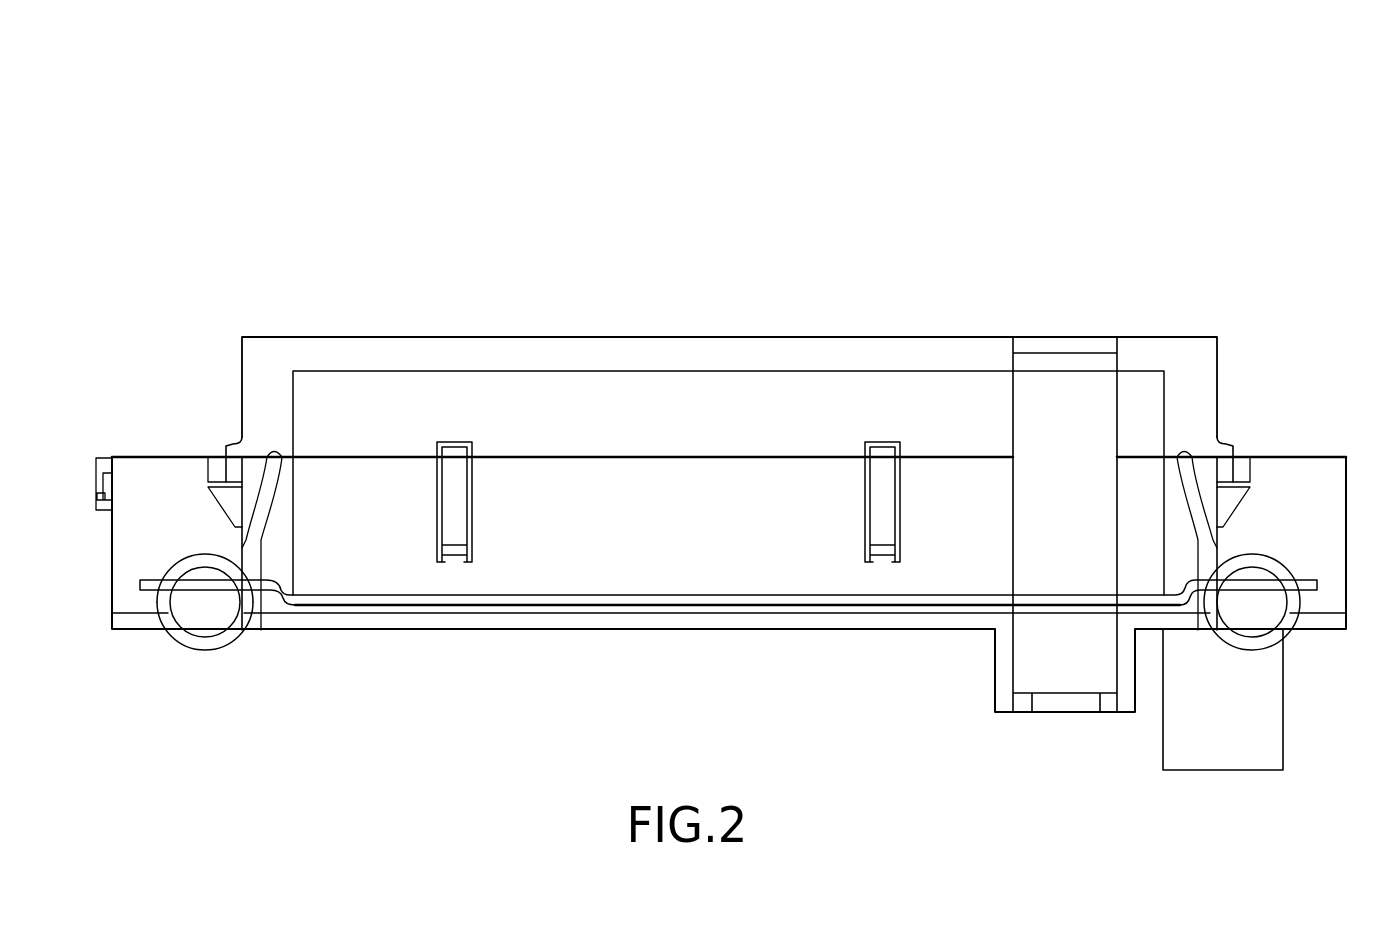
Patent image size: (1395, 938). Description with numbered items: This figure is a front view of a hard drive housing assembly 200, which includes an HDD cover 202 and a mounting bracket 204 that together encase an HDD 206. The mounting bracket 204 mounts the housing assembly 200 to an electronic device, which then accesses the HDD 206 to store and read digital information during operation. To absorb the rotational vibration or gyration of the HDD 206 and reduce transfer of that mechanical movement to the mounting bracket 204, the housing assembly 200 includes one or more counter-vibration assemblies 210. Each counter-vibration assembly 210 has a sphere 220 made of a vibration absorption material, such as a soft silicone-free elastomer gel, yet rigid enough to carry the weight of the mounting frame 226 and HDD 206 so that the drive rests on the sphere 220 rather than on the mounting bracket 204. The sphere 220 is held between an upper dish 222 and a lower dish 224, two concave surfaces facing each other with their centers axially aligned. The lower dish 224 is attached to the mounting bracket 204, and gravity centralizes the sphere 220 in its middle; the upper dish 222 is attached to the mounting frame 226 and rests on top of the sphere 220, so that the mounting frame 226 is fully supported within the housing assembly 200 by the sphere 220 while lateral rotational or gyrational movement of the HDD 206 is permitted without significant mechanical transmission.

The housing assembly 200 is at (742, 140).
The HDD cover 202 is at (570, 335).
The mounting bracket 204 is at (731, 630).
The HDD 206 is at (808, 395).
The counter-vibration assembly 210 is at (1268, 615).
The sphere 220 is at (218, 616).
The upper dish 222 is at (197, 556).
The lower dish 224 is at (172, 616).
The mounting frame 226 is at (459, 600).